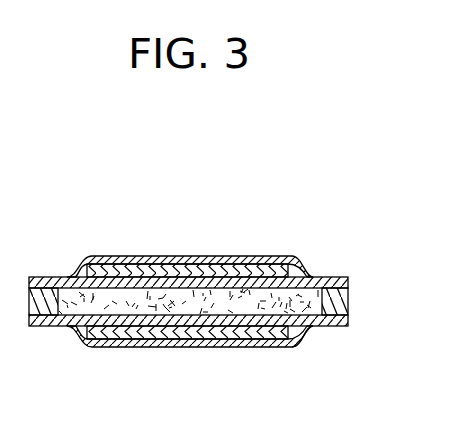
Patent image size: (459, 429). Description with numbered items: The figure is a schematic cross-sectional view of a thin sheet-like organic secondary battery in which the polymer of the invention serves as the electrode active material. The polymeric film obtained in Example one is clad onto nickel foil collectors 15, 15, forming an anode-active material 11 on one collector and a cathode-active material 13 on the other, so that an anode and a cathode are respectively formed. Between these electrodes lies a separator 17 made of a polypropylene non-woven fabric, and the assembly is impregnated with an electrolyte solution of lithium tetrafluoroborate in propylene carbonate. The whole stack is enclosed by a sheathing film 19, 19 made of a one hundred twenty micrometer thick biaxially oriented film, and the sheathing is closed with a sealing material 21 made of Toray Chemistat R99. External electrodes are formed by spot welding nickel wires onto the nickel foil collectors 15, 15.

The anode-active material 11 is at (299, 266).
The cathode-active material 13 is at (302, 328).
The Ni foil collector 15 is at (218, 268).
The separator 17 is at (66, 285).
The sheathing film 19 is at (164, 257).
The sealing material 21 is at (350, 302).